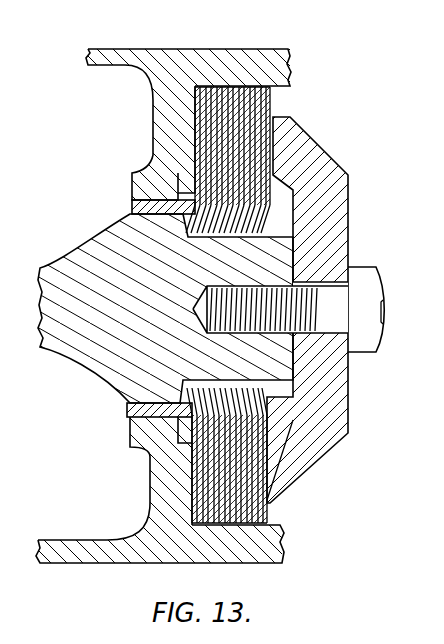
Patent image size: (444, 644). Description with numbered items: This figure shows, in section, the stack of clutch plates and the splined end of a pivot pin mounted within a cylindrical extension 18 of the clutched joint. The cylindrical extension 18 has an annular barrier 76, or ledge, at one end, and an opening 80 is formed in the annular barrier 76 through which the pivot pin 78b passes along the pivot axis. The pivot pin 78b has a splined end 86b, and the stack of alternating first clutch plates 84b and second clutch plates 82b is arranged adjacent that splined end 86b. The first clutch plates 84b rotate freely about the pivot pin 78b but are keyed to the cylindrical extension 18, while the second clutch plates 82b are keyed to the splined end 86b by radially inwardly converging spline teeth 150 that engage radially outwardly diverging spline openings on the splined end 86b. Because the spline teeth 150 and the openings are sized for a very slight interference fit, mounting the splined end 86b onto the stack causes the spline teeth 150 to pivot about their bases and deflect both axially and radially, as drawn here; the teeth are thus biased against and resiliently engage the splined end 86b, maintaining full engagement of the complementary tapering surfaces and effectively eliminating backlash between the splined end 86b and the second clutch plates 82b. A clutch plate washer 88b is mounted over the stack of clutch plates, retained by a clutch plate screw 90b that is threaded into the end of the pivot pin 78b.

The cylindrical extension 18 is at (268, 53).
The annular barrier 76 is at (172, 128).
The opening 80 is at (130, 208).
The pivot pin 78b is at (61, 350).
The splined end 86b is at (183, 337).
The clutch plate washer 88b is at (340, 194).
The clutch plate screw 90b is at (367, 285).
The spline teeth 150 is at (300, 305).
The second clutch plates 82b is at (267, 505).
The first clutch plates 84b is at (263, 515).